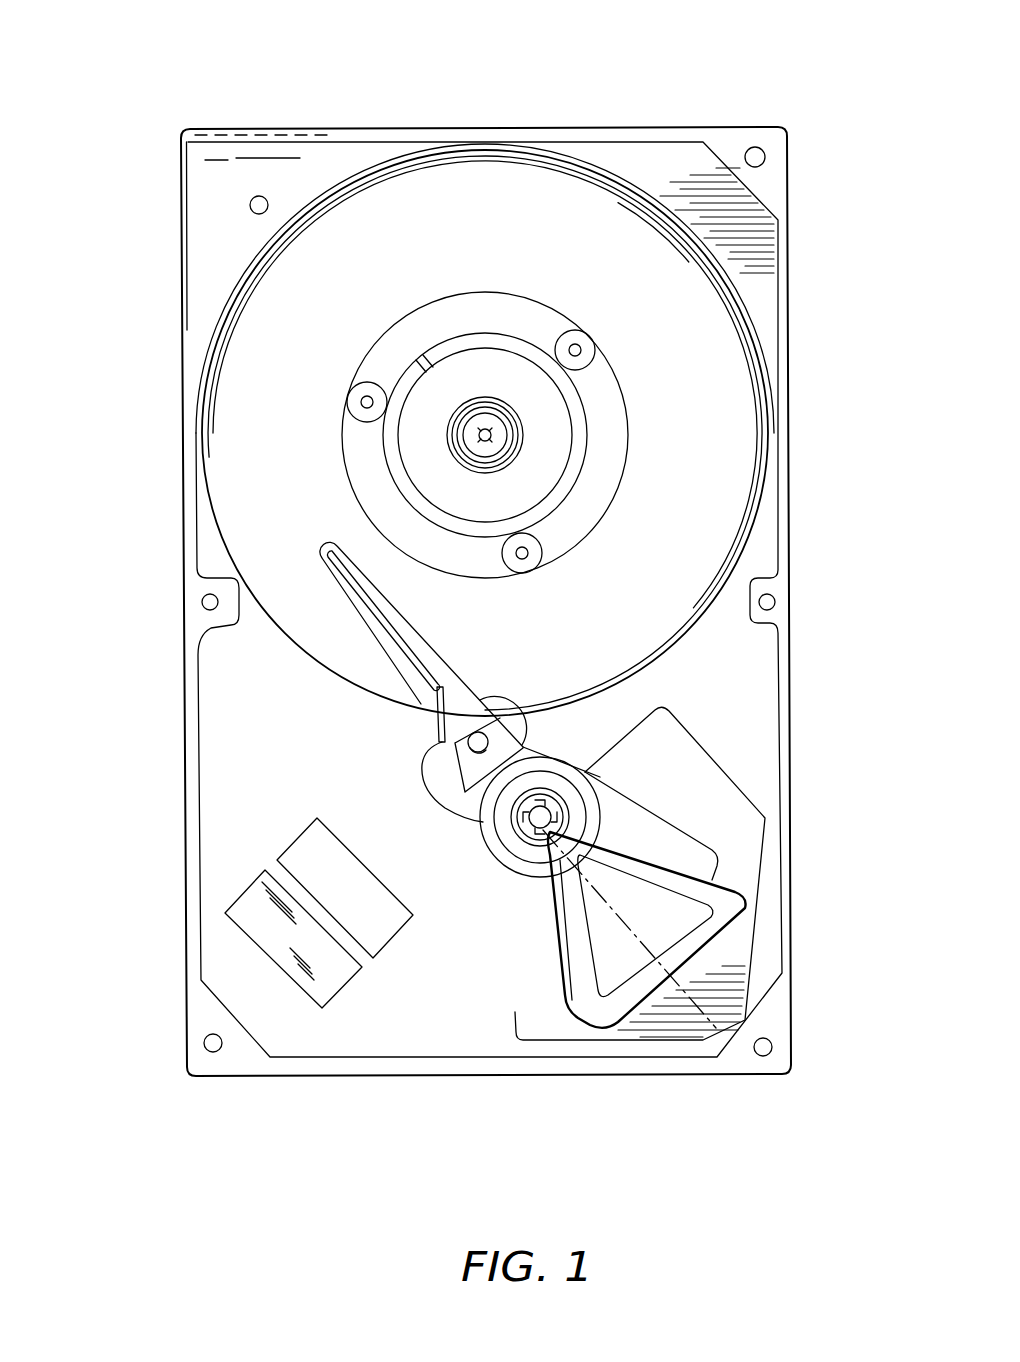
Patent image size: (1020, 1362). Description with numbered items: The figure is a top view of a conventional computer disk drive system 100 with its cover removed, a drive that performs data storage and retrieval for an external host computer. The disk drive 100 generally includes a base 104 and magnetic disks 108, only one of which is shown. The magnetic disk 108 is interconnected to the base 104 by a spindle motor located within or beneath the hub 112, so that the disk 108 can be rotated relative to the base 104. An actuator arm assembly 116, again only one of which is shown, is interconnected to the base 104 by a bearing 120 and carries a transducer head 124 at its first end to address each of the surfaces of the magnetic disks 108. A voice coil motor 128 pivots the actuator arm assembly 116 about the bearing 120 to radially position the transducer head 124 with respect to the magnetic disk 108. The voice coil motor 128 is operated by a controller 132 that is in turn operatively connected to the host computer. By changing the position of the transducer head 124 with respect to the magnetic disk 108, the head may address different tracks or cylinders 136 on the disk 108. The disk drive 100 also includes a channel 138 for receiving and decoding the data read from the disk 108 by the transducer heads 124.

The disk drive system 100 is at (497, 103).
The base 104 is at (760, 688).
The magnetic disk 108 is at (742, 400).
The tracks or cylinders 136 is at (755, 493).
The hub 112 is at (471, 447).
The actuator arm assembly 116 is at (367, 628).
The transducer head 124 is at (315, 562).
The bearing 120 is at (540, 830).
The voice coil motor 128 is at (603, 1007).
The channel 138 is at (305, 852).
The controller 132 is at (270, 950).